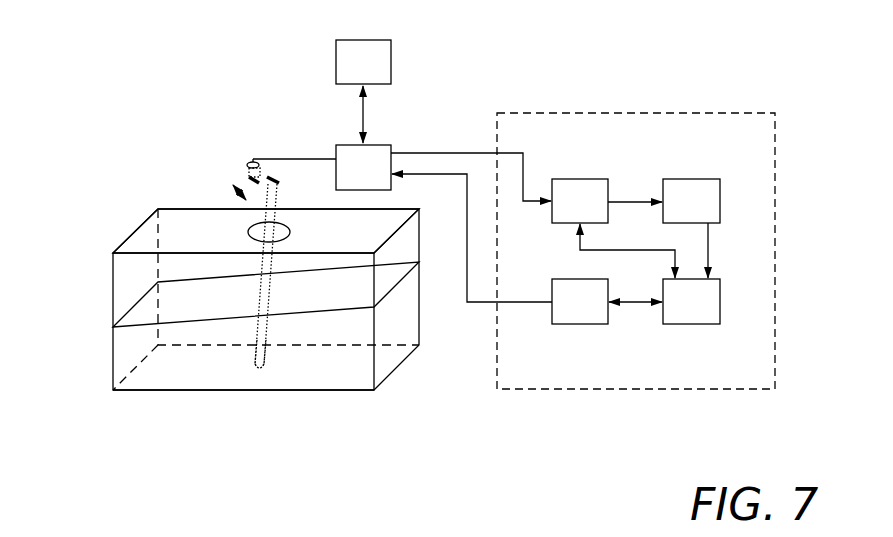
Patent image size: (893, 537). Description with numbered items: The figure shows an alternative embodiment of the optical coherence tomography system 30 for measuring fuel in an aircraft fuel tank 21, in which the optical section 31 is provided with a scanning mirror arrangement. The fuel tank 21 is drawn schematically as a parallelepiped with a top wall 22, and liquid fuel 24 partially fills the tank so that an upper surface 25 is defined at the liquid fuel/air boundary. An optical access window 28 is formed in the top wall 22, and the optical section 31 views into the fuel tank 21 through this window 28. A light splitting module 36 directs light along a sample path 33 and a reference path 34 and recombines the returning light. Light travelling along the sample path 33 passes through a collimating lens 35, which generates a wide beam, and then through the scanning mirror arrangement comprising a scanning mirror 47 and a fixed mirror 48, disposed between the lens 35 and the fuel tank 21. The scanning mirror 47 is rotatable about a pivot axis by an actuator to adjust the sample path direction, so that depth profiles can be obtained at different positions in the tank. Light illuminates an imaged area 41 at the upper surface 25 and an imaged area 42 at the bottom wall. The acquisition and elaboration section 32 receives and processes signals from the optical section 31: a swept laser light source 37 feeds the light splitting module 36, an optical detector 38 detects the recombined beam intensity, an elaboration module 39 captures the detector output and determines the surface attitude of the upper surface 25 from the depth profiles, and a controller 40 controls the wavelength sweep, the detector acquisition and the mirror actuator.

The fuel tank 21 is at (113, 272).
The top wall 22 is at (165, 209).
The fuel 24 is at (128, 357).
The upper surface 25 is at (133, 303).
The optical access window 28 is at (248, 232).
The optical coherence tomography system 30 is at (672, 195).
The optical section 31 is at (444, 164).
The acquisition and elaboration section 32 is at (776, 180).
The sample path 33 is at (307, 158).
The reference path 34 is at (363, 62).
The lens 35 is at (252, 163).
The light splitting module 36 is at (363, 167).
The light source 37 is at (580, 301).
The optical detector 38 is at (580, 201).
The elaboration module 39 is at (691, 201).
The controller 40 is at (691, 301).
The imaged area 41 is at (262, 293).
The imaged area 42 is at (258, 369).
The scanning mirror 47 is at (248, 180).
The fixed mirror 48 is at (268, 176).